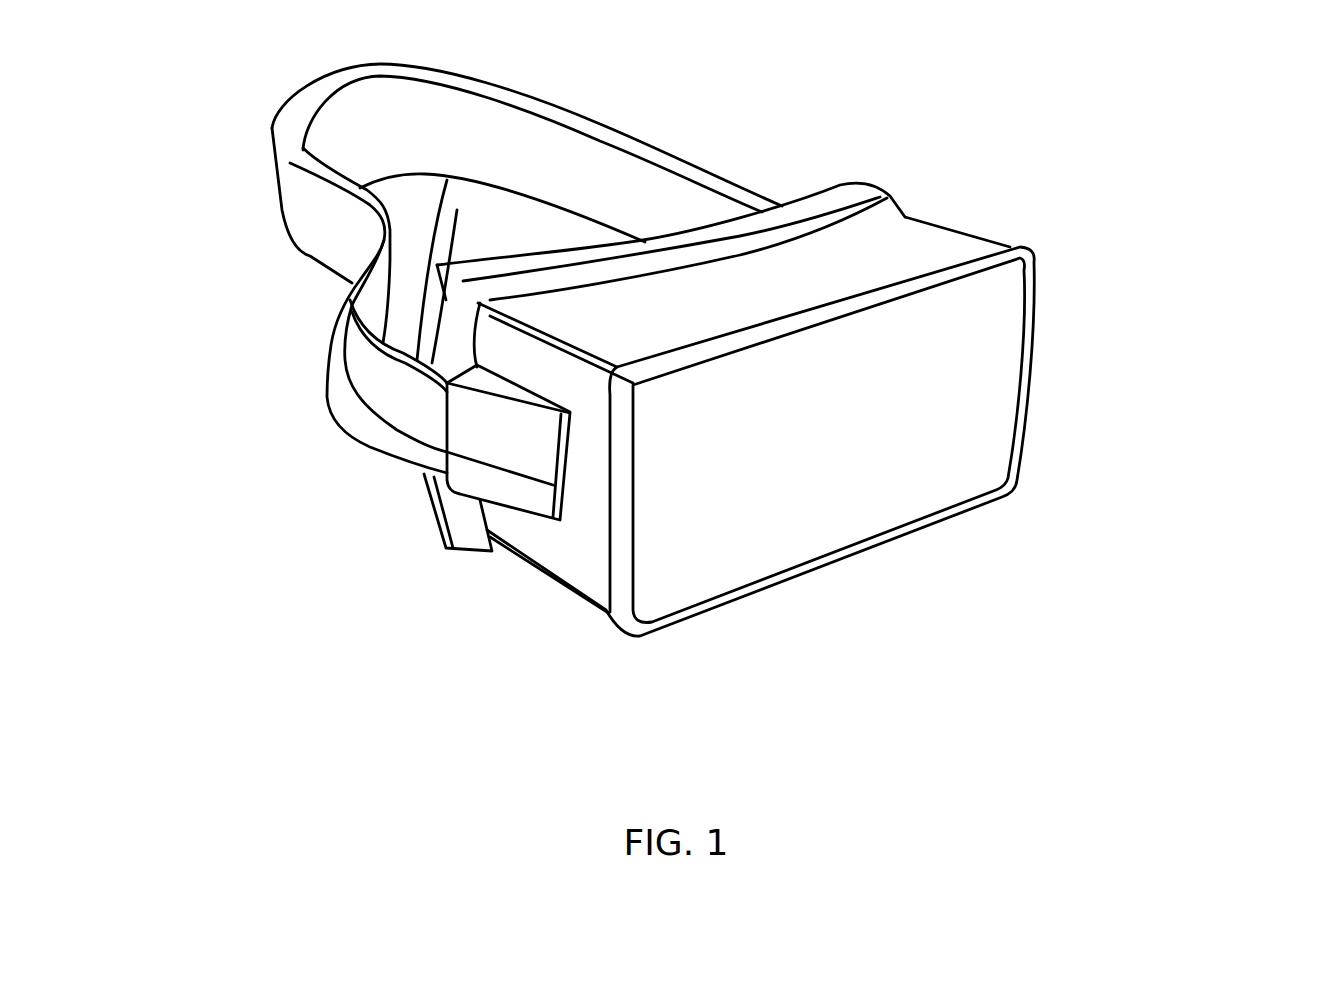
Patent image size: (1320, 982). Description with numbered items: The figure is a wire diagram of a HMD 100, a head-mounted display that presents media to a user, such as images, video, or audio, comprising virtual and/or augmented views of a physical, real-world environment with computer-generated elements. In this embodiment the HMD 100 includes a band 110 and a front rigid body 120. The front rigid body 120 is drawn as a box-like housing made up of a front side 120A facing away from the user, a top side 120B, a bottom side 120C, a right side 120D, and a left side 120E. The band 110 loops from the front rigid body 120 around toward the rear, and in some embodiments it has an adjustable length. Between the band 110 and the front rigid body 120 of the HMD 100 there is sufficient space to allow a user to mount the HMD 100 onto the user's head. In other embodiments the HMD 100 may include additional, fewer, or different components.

The HMD 100 is at (143, 97).
The band 110 is at (666, 136).
The front rigid body 120 is at (717, 416).
The front side 120A is at (940, 491).
The top side 120B is at (553, 308).
The bottom side 120C is at (516, 616).
The right side 120D is at (570, 571).
The left side 120E is at (976, 175).